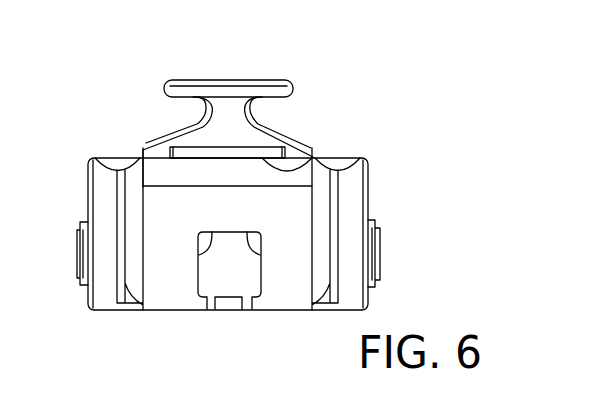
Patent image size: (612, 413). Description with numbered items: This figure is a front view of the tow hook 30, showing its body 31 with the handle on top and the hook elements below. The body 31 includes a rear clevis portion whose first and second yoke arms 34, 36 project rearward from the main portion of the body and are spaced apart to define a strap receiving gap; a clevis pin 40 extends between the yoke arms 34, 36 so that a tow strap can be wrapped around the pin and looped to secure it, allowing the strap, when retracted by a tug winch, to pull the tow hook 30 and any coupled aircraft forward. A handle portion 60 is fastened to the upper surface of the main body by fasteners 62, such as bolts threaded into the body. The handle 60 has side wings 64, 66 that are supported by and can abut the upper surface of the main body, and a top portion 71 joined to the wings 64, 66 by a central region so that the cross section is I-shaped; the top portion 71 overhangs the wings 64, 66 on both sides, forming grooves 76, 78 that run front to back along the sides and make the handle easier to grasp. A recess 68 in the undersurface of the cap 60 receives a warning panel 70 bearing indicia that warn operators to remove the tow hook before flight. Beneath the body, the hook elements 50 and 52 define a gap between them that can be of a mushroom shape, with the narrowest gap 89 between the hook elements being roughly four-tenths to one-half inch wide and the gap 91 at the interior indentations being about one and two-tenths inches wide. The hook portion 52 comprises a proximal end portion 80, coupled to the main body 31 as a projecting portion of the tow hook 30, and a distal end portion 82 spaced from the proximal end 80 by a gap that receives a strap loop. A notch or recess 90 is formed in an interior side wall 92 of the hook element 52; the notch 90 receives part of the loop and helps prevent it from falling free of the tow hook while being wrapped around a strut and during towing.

The tow hook 30 is at (123, 58).
The body 31 is at (375, 175).
The first yoke arm 34 is at (107, 160).
The second yoke arm 36 is at (340, 158).
The clevis pin 40 is at (380, 248).
The hook element 50 is at (168, 288).
The hook portion 52 is at (297, 297).
The handle portion 60 is at (231, 98).
The fasteners 62 is at (220, 80).
The side wing 64 is at (152, 143).
The side wing 66 is at (310, 148).
The recess 68 is at (297, 162).
The warning panel 70 is at (228, 146).
The top portion 71 is at (207, 80).
The groove 76 is at (190, 112).
The groove 78 is at (268, 113).
The proximal end portion 80 is at (170, 240).
The distal end portion 82 is at (178, 310).
The narrowest gap 89 is at (227, 305).
The notch 90 is at (205, 273).
The gap 91 is at (228, 265).
The interior side wall 92 is at (210, 232).